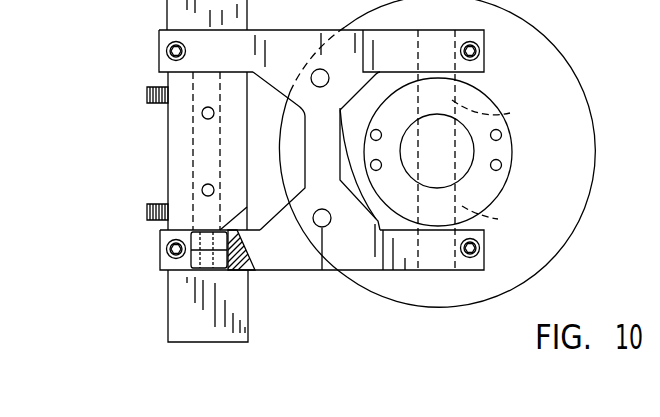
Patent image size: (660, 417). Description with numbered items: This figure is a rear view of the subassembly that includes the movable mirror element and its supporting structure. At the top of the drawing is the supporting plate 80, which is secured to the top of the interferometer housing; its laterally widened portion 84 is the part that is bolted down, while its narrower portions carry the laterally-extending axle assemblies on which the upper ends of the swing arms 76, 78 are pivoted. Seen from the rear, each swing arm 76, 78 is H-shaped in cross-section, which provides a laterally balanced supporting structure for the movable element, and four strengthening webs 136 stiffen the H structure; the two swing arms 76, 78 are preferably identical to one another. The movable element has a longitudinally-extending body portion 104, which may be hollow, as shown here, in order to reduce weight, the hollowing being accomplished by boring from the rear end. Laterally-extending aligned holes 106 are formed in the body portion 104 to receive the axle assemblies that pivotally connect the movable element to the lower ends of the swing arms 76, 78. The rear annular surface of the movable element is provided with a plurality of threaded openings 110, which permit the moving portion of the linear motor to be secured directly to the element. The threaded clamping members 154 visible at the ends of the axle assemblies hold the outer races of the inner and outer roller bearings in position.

The swing arm 76 is at (322, 276).
The swing arm 78 is at (303, 274).
The supporting plate 80 is at (163, 171).
The laterally widened portion 84 is at (183, 137).
The body portion 104 is at (510, 141).
The aligned holes 106 is at (500, 113).
The threaded openings 110 is at (381, 136).
The strengthening web 136 is at (290, 107).
The threaded clamping member 154 is at (164, 54).